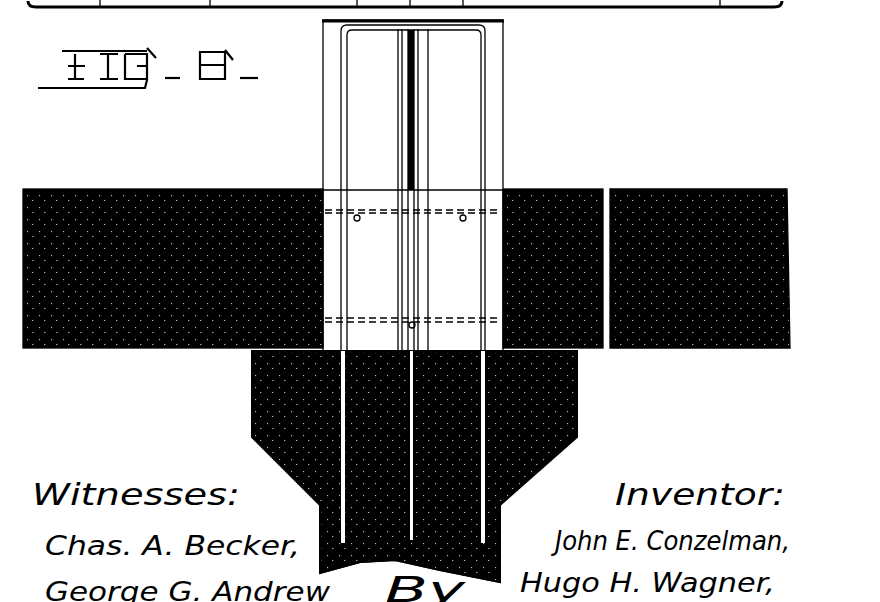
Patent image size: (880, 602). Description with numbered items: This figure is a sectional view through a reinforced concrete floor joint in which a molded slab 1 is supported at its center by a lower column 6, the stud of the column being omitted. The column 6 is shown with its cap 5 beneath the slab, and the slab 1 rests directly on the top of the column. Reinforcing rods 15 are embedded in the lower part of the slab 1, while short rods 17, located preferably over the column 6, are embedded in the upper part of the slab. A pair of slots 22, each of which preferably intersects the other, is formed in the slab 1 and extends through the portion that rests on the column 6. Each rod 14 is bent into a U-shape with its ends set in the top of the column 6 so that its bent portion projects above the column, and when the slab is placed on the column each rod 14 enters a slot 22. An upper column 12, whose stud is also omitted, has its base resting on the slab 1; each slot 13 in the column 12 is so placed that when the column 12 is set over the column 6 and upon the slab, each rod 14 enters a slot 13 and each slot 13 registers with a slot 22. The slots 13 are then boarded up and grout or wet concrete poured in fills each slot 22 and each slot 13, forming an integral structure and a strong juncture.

The slab 1 is at (567, 190).
The cap 5 is at (578, 398).
The column 6 is at (503, 522).
The column 12 is at (504, 40).
The slot 13 is at (418, 91).
The rod 14 is at (486, 128).
The reinforcing rod 15 is at (325, 317).
The short rod 17 is at (283, 190).
The slot 22 is at (418, 263).